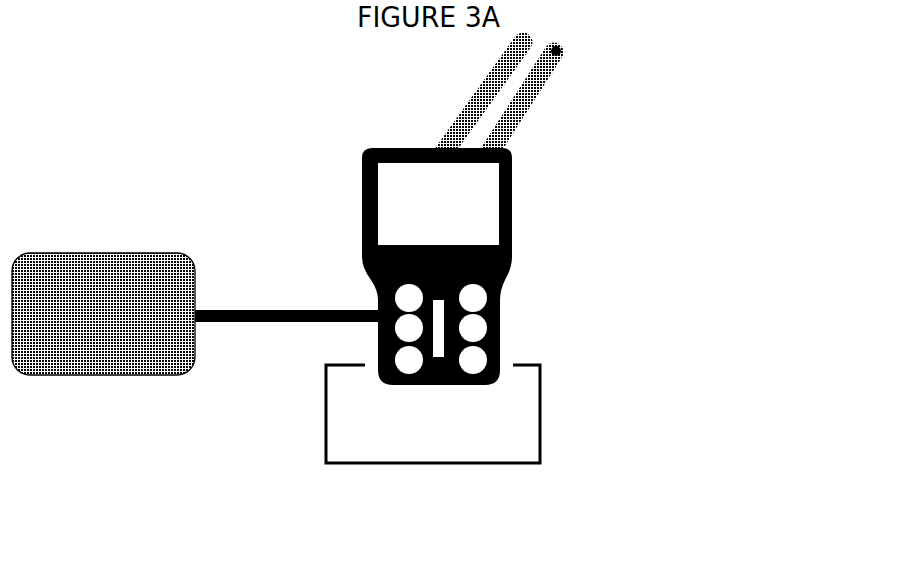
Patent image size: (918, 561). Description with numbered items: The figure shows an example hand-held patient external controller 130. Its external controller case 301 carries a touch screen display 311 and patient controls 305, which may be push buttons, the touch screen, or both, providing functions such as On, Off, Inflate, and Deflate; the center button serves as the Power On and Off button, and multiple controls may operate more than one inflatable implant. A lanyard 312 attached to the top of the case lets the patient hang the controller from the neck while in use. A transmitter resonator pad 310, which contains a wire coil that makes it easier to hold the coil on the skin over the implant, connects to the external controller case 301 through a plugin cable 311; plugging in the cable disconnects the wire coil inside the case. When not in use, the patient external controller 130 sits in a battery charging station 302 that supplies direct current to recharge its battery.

The patient external controller 130 is at (358, 125).
The external controller case 301 is at (515, 155).
The battery charging station 302 is at (545, 410).
The patient controls 305 is at (518, 316).
The transmitter resonator pad 310 is at (110, 248).
The touch screen display / plugin cable 311 is at (518, 203).
The lanyard 312 is at (540, 104).